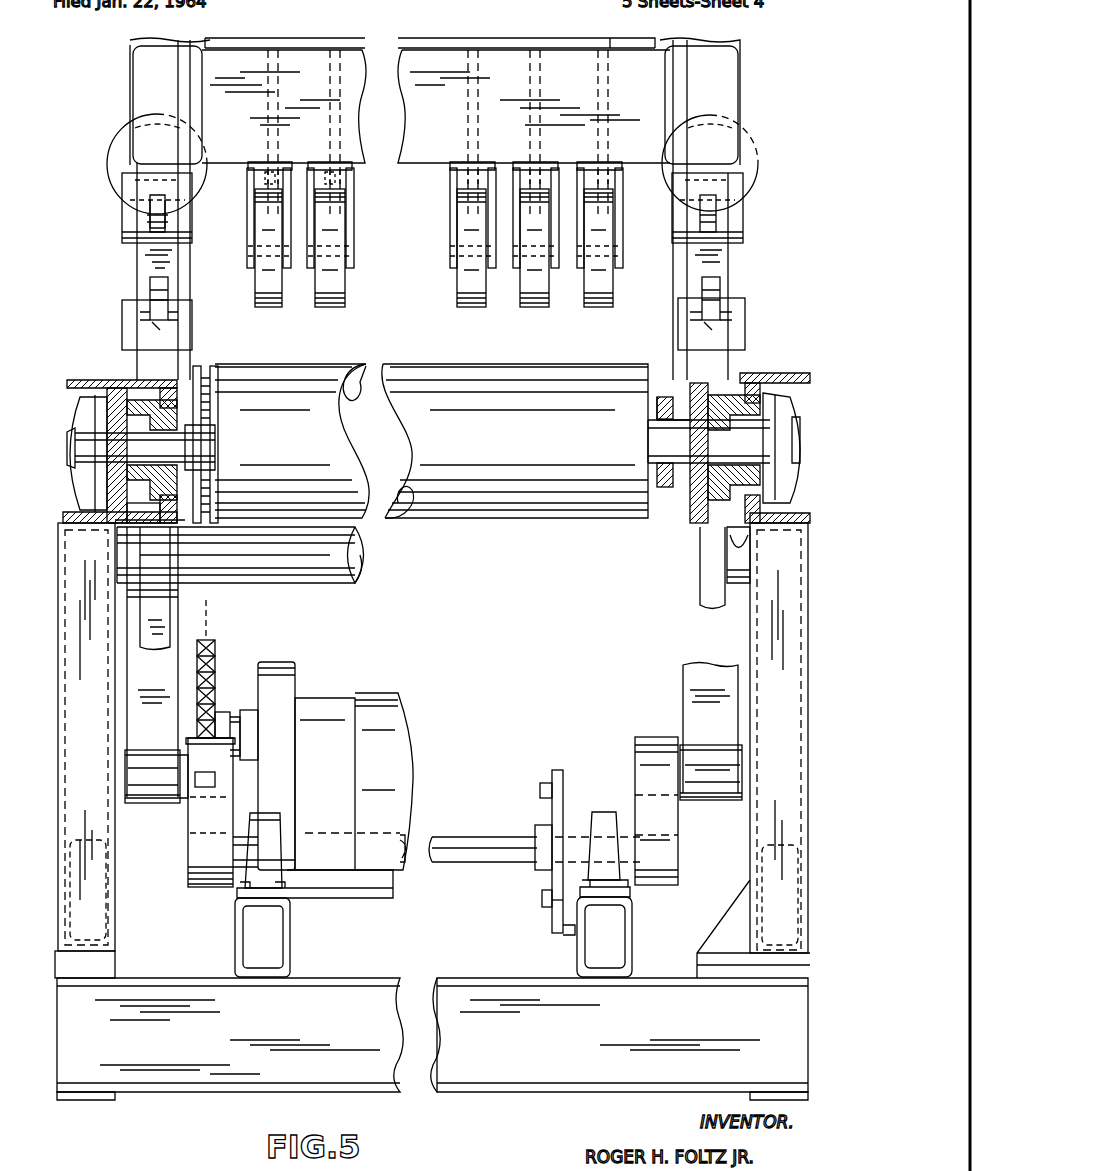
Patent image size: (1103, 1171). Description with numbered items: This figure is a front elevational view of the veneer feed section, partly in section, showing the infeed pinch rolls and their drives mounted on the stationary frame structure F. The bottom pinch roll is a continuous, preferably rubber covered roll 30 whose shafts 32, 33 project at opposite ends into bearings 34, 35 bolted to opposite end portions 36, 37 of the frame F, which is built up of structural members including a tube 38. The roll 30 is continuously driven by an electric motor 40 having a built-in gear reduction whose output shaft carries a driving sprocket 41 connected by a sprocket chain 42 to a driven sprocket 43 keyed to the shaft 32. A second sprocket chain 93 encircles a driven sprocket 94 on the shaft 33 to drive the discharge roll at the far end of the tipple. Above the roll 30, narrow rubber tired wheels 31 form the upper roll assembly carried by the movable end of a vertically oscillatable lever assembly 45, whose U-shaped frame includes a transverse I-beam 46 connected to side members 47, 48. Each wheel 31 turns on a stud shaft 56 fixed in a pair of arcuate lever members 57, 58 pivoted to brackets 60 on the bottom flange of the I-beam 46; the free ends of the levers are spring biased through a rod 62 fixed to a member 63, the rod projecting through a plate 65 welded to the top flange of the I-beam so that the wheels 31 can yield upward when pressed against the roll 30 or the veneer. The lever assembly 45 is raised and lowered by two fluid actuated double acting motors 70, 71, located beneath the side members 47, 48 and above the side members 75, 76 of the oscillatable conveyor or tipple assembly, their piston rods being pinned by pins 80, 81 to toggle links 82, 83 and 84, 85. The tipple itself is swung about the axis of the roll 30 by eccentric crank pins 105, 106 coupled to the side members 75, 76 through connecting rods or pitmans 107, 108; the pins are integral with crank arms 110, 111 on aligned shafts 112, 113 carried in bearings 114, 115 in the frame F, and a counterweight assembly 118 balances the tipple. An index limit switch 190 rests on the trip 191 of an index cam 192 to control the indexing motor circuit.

The continuous roll 30 is at (455, 366).
The rubber tired wheels 31 is at (325, 308).
The shaft 32 is at (100, 445).
The shaft 33 is at (650, 438).
The bearing 34 is at (85, 410).
The bearing 35 is at (785, 478).
The end portion 36 is at (80, 520).
The end portion 37 is at (790, 520).
The tube 38 is at (345, 583).
The electric motor 40 is at (398, 692).
The driving sprocket 41 is at (222, 712).
The sprocket chain 42 is at (215, 662).
The driven sprocket 43 is at (205, 368).
The lever assembly 45 is at (118, 74).
The I-beam 46 is at (345, 118).
The side member 47 is at (133, 100).
The side member 48 is at (740, 95).
The stud shaft 56 is at (353, 258).
The lever member 57 is at (247, 228).
The lever member 58 is at (353, 218).
The bracket 60 is at (265, 168).
The rod 62 is at (268, 118).
The member 63 is at (345, 186).
The plate 65 is at (630, 42).
The fluid actuated motor 70 is at (108, 190).
The fluid actuated motor 71 is at (755, 140).
The side member 75 is at (150, 347).
The side member 76 is at (725, 345).
The pin 80 is at (118, 222).
The pin 81 is at (745, 213).
The toggle link 82 is at (140, 162).
The toggle link 83 is at (137, 265).
The toggle link 84 is at (720, 185).
The toggle link 85 is at (725, 248).
The sprocket chain 93 is at (655, 398).
The driven sprocket 94 is at (668, 488).
The crank pin 105 is at (125, 800).
The crank pin 106 is at (742, 795).
The connecting rod 107 is at (155, 736).
The connecting rod 108 is at (685, 700).
The crank arm 110 is at (212, 887).
The crank arm 111 is at (670, 818).
The shaft 112 is at (408, 838).
The shaft 113 is at (505, 837).
The bearing 114 is at (268, 878).
The bearing 115 is at (604, 812).
The counterweight assembly 118 is at (700, 572).
The index limit switch 190 is at (565, 932).
The trip 191 is at (542, 905).
The index cam 192 is at (555, 770).
The frame structure F is at (453, 962).